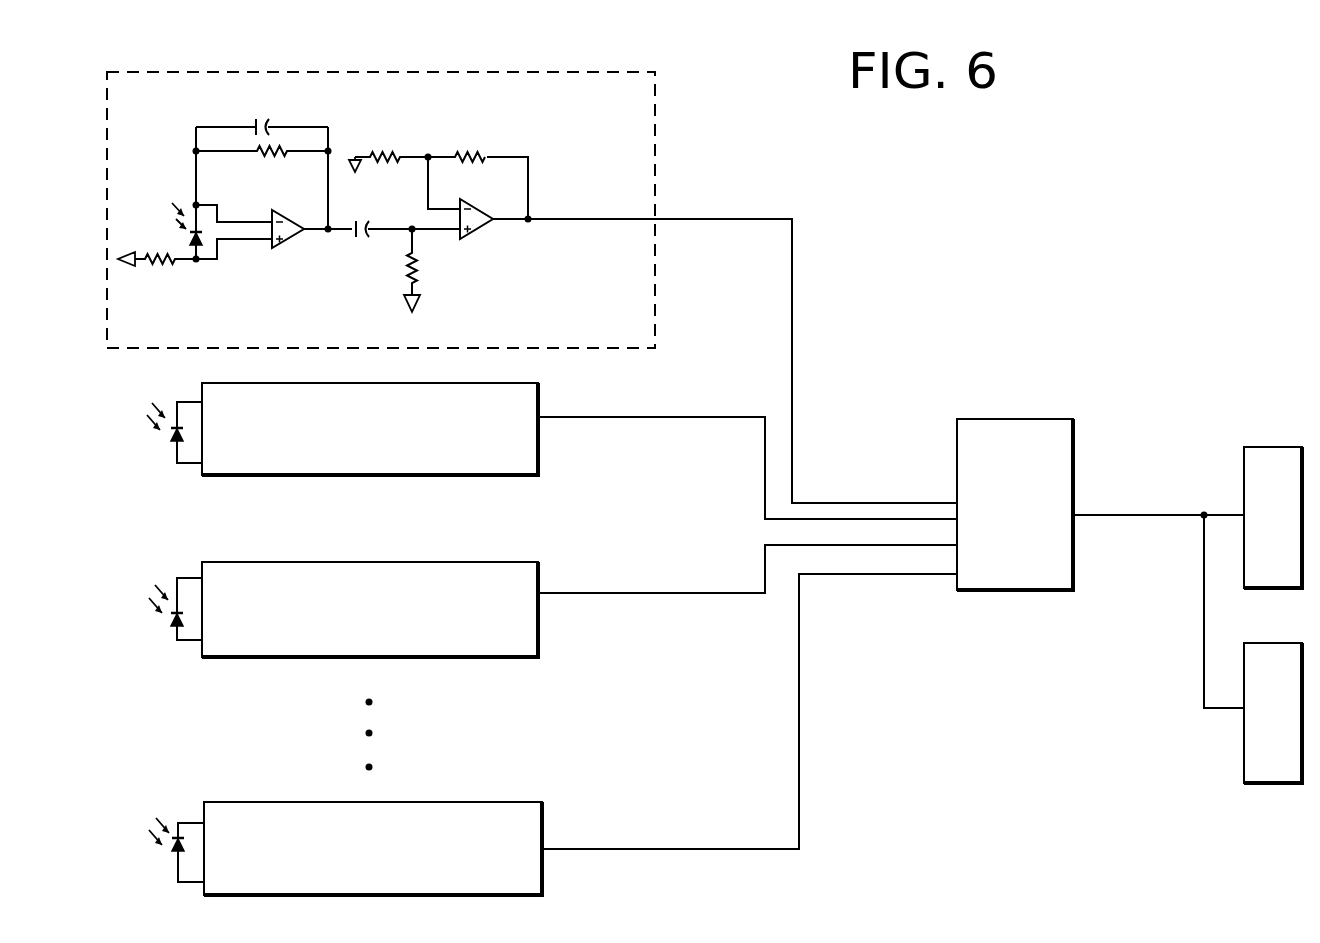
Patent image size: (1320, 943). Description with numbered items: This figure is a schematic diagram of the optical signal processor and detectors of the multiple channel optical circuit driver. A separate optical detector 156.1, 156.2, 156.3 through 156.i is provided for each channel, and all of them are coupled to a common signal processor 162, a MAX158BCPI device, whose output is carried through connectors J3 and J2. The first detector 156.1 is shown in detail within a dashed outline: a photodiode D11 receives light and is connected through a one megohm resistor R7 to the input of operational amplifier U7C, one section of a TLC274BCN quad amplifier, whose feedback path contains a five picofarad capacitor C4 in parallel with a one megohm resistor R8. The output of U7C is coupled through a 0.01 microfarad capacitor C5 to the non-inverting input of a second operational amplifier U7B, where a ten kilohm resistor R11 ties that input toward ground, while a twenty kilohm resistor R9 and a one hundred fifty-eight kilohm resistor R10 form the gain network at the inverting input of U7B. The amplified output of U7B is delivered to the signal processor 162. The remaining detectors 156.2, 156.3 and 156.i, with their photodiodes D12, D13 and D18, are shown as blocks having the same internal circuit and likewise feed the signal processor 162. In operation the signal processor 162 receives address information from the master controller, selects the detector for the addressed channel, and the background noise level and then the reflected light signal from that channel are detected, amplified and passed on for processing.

The optical detector 156.1 is at (655, 74).
The optical detector 156.2 is at (538, 400).
The optical detector 156.3 is at (538, 648).
The optical detector 156.i is at (542, 822).
The signal processor 162 is at (1020, 419).
The connector J2 is at (1273, 698).
The connector J3 is at (1273, 499).
The photodiode D11 is at (170, 219).
The photodiode D12 is at (153, 432).
The photodiode D13 is at (161, 609).
The photodiode D18 is at (158, 850).
The capacitor C4 is at (262, 109).
The capacitor C5 is at (362, 214).
The resistor R7 is at (157, 276).
The resistor R8 is at (262, 167).
The resistor R9 is at (388, 146).
The resistor R10 is at (456, 141).
The resistor R11 is at (424, 270).
The operational amplifier U7C is at (295, 243).
The operational amplifier U7B is at (481, 208).